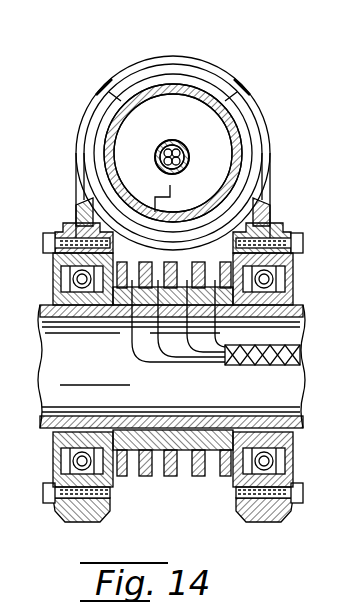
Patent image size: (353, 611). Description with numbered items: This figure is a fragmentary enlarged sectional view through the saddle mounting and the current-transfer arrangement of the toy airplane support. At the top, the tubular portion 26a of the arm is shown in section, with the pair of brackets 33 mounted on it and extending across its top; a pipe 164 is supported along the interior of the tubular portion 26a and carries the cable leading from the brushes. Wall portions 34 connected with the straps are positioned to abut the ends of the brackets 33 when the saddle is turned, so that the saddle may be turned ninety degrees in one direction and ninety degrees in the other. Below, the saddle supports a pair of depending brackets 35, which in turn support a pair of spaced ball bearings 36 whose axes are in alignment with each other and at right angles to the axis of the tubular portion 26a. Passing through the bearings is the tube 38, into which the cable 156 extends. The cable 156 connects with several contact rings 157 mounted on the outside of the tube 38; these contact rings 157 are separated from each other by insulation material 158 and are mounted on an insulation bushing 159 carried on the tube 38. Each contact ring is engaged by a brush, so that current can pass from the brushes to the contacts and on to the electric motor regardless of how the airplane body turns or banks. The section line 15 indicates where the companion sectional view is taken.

The section line 15— 15 is at (197, 15).
The brackets 33 is at (209, 62).
The tubular portion 26a is at (236, 128).
The pipe 164 is at (173, 140).
The wall portions 34 is at (80, 205).
The depending brackets 35 is at (52, 268).
The ball bearings 36 is at (73, 280).
The tube 38 is at (305, 411).
The contact rings 157 is at (160, 262).
The insulation material 158 is at (200, 262).
The insulation bushing 159 is at (126, 333).
The cable 156 is at (300, 357).